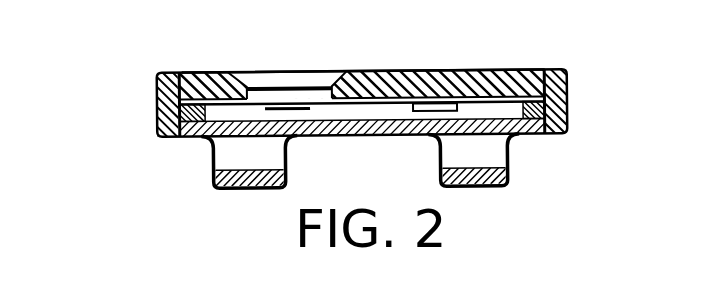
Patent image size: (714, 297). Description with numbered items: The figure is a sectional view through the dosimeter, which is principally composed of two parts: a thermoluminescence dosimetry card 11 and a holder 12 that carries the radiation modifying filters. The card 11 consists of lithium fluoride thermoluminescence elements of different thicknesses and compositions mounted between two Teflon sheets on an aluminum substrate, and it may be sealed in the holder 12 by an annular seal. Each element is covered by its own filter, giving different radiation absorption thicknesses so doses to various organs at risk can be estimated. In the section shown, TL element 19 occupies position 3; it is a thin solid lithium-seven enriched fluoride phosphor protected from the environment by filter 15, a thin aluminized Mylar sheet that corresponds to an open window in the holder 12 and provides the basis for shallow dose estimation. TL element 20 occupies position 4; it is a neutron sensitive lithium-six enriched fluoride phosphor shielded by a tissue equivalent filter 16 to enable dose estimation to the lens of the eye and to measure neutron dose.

The holder 12 is at (157, 107).
The filter 15 is at (264, 61).
The filter 16 is at (482, 61).
The position 3 is at (286, 70).
The position 4 is at (360, 69).
The thermoluminescence dosimetry card 11 is at (357, 105).
The TL element 19 is at (297, 110).
The TL element 20 is at (427, 112).